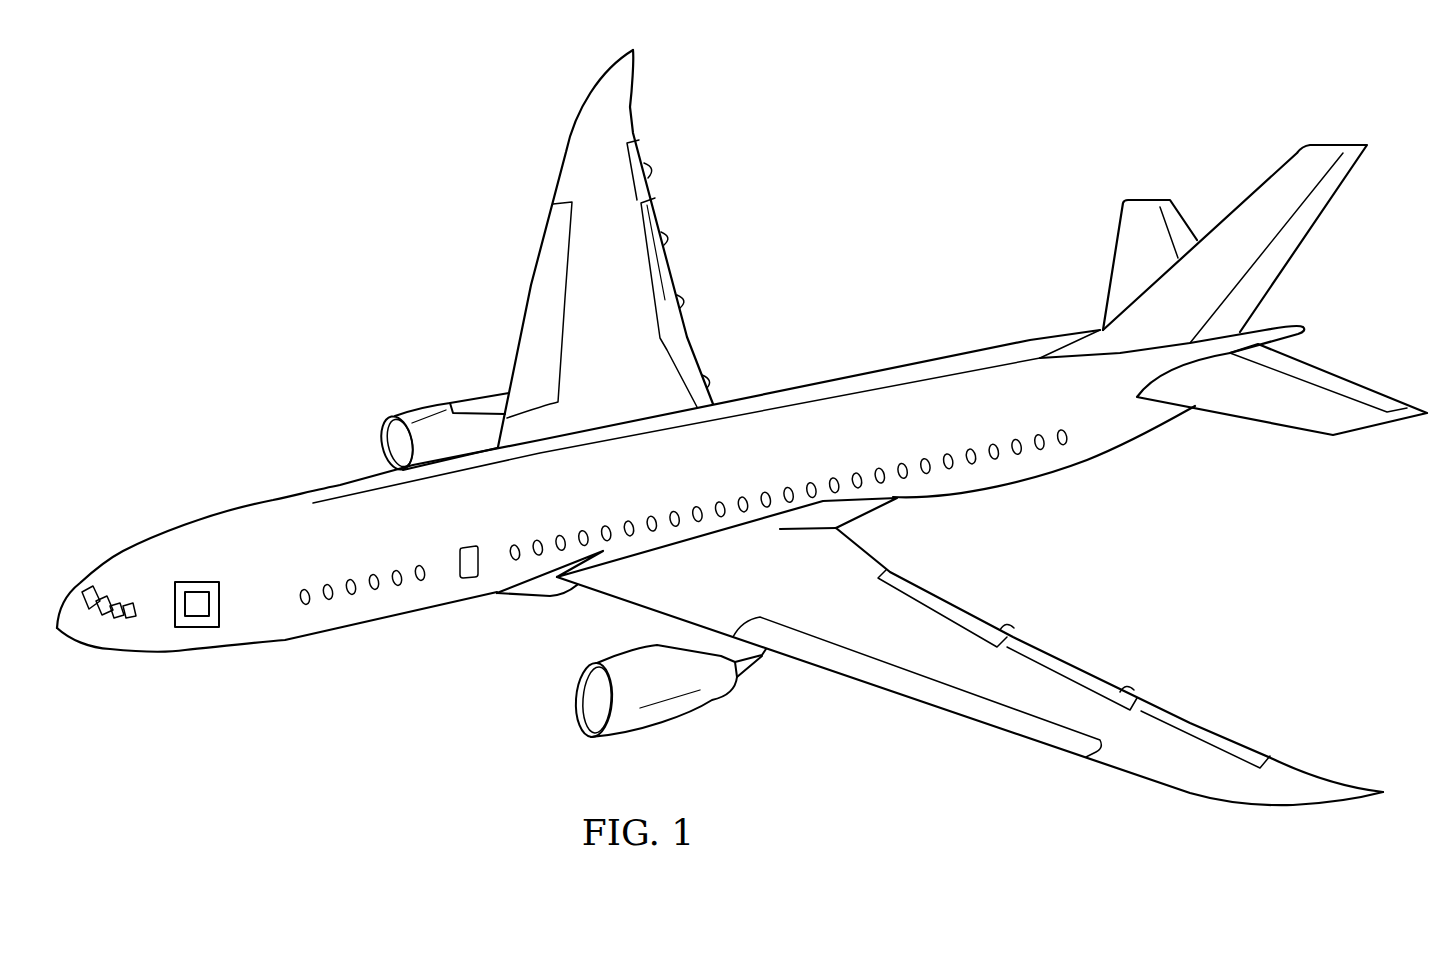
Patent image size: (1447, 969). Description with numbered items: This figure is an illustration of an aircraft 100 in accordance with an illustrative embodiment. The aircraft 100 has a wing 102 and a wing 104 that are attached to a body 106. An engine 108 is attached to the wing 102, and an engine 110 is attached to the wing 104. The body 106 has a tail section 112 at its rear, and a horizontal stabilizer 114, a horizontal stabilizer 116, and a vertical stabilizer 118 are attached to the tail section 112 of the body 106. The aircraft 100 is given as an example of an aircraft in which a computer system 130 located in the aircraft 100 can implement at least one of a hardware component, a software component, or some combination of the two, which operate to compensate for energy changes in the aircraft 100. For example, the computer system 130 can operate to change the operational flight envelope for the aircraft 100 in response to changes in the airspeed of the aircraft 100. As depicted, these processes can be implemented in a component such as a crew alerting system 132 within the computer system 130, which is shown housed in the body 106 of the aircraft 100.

The aircraft 100 is at (338, 204).
The wing 102 is at (633, 87).
The wing 104 is at (1227, 805).
The body 106 is at (240, 507).
The engine 108 is at (425, 400).
The engine 110 is at (672, 723).
The tail section 112 is at (1184, 462).
The horizontal stabilizer 114 is at (1112, 262).
The horizontal stabilizer 116 is at (1285, 423).
The vertical stabilizer 118 is at (1317, 230).
The computer system 130 is at (197, 627).
The crew alerting system (CAS) 132 is at (205, 590).